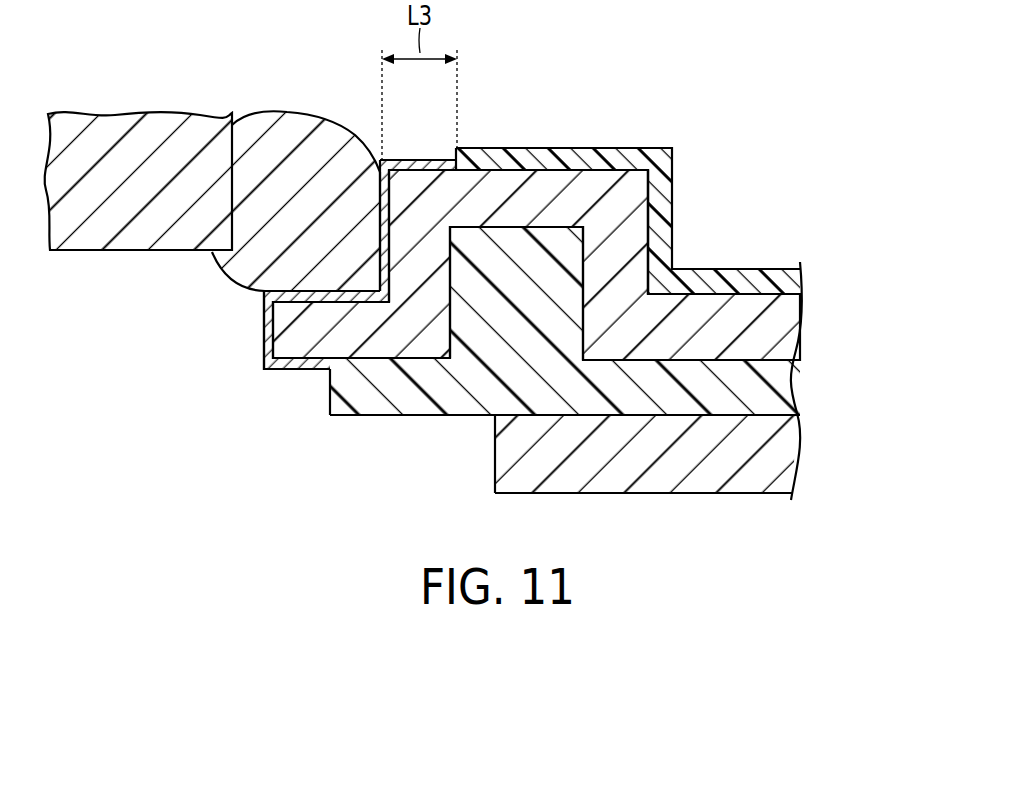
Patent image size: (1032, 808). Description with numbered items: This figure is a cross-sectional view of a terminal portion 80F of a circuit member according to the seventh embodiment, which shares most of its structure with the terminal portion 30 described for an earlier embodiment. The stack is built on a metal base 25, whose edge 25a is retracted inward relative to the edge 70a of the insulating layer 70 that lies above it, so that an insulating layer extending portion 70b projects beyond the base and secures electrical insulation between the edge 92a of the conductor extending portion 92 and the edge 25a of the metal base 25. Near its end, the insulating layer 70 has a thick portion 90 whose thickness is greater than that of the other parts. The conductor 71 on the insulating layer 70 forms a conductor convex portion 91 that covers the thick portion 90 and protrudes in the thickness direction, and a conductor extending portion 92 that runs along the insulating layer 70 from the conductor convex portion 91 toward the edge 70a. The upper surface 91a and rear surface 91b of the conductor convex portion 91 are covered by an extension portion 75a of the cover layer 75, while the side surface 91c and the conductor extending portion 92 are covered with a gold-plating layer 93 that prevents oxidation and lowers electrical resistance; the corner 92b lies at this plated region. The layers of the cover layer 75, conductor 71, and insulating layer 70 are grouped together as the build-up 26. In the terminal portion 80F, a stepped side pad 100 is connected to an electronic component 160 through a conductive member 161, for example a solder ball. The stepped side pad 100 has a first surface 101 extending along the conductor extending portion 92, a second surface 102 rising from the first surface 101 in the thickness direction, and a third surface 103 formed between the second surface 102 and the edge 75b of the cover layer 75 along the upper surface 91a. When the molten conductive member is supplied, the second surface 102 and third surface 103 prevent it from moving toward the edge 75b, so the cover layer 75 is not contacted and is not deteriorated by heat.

The electronic component 160 is at (120, 128).
The conductive member 161 is at (266, 174).
The stepped side pad 100 is at (266, 160).
The first surface 101 is at (297, 268).
The second surface 102 is at (355, 195).
The third surface 103 is at (412, 160).
The side surface of conductor convex portion 91c is at (378, 168).
The gold-plating layer 93 is at (301, 330).
The edge of conductor extending portion 92a is at (272, 342).
The upper corner of conductor pad 92b is at (290, 288).
The terminal portion 80F is at (625, 159).
The extension portion of cover layer 75a is at (632, 148).
The edge of cover layer 75b is at (452, 148).
The conductor convex portion 91 is at (577, 148).
The upper surface of conductor convex portion 91a is at (486, 150).
The rear surface of conductor convex portion 91b is at (652, 240).
The thick portion 90 is at (525, 265).
The conductor extending portion 92 is at (377, 340).
The build-up layer 26 is at (581, 292).
The cover layer 75 is at (800, 288).
The conductor 71 is at (566, 319).
The insulating layer 70 is at (556, 292).
The edge of insulating layer 70a is at (330, 400).
The insulating layer extending portion 70b is at (413, 417).
The metal base 25 is at (640, 464).
The edge of metal base 25a is at (492, 470).
The terminal portion 30 is at (799, 246).